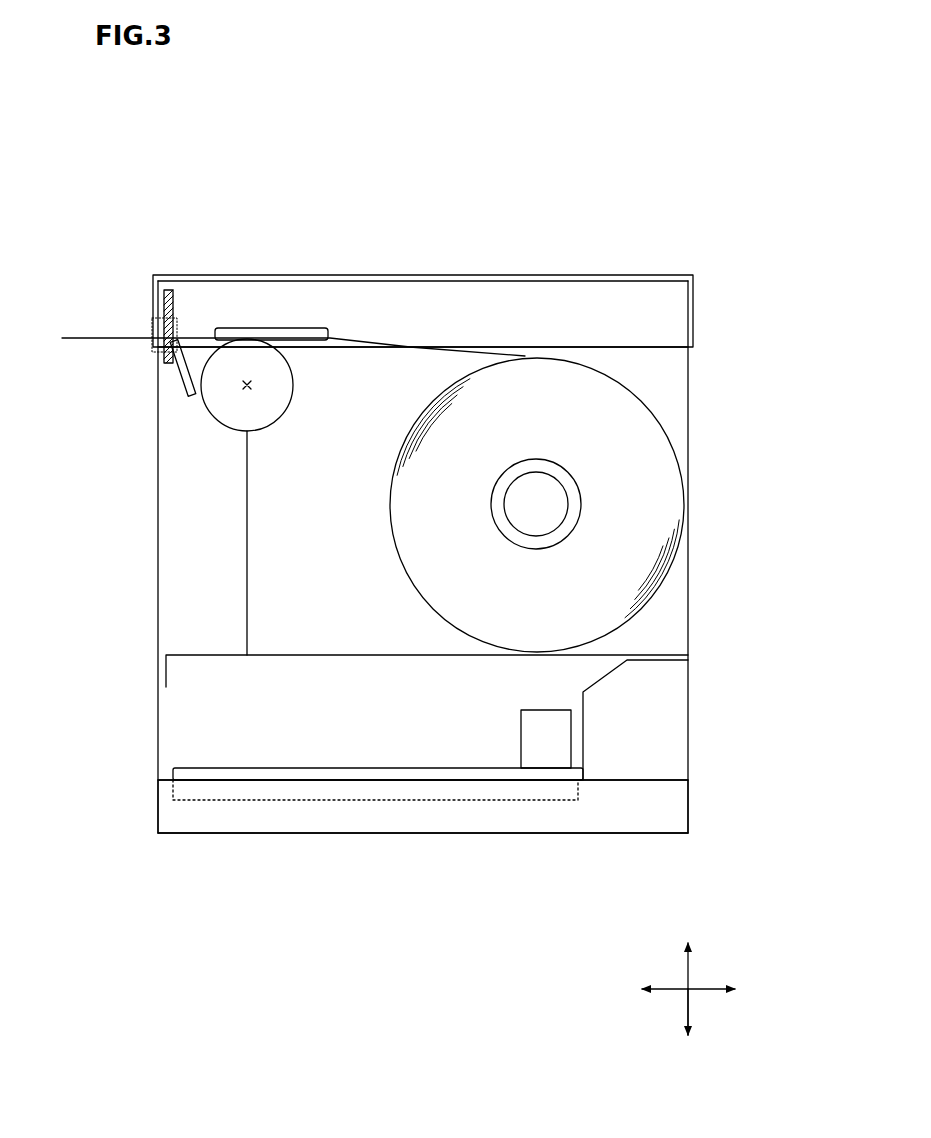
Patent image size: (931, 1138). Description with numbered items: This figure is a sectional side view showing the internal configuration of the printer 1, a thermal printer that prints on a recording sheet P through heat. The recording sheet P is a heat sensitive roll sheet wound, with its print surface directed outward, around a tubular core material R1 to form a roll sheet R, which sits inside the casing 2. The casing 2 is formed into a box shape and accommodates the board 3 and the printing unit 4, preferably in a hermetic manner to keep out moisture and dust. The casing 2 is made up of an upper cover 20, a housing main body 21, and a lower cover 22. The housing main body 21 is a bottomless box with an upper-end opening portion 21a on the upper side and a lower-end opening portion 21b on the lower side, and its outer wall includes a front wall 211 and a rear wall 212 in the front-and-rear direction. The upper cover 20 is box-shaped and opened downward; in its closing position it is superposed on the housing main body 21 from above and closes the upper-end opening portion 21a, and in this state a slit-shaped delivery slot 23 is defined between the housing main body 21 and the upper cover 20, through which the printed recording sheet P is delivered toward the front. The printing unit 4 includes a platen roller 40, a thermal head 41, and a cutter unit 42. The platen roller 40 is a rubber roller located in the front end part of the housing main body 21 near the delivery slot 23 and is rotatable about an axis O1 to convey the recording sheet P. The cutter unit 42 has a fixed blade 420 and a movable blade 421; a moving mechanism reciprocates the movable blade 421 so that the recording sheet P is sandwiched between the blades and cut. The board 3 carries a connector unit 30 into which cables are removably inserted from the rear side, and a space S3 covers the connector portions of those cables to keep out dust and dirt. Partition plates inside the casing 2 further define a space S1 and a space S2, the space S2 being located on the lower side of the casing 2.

The printer 1 is at (100, 200).
The casing 2 is at (742, 322).
The board 3 is at (175, 772).
The printing unit 4 is at (258, 310).
The upper cover 20 is at (673, 275).
The housing main body 21 is at (675, 383).
The upper-end opening portion 21a is at (567, 275).
The lower-end opening portion 21b is at (632, 783).
The lower cover 22 is at (673, 808).
The delivery slot 23 is at (157, 318).
The connector unit 30 is at (543, 758).
The platen roller 40 is at (275, 398).
The thermal head 41 is at (298, 330).
The cutter unit 42 is at (137, 322).
The fixed blade 420 is at (182, 385).
The movable blade 421 is at (172, 300).
The front wall 211 is at (155, 412).
The rear wall 212 is at (690, 423).
The recording sheet P is at (75, 337).
The roll sheet R is at (657, 538).
The core material R1 is at (572, 503).
The axis O1 is at (247, 389).
The space S1 is at (301, 523).
The space S2 is at (234, 698).
The space S3 is at (668, 724).